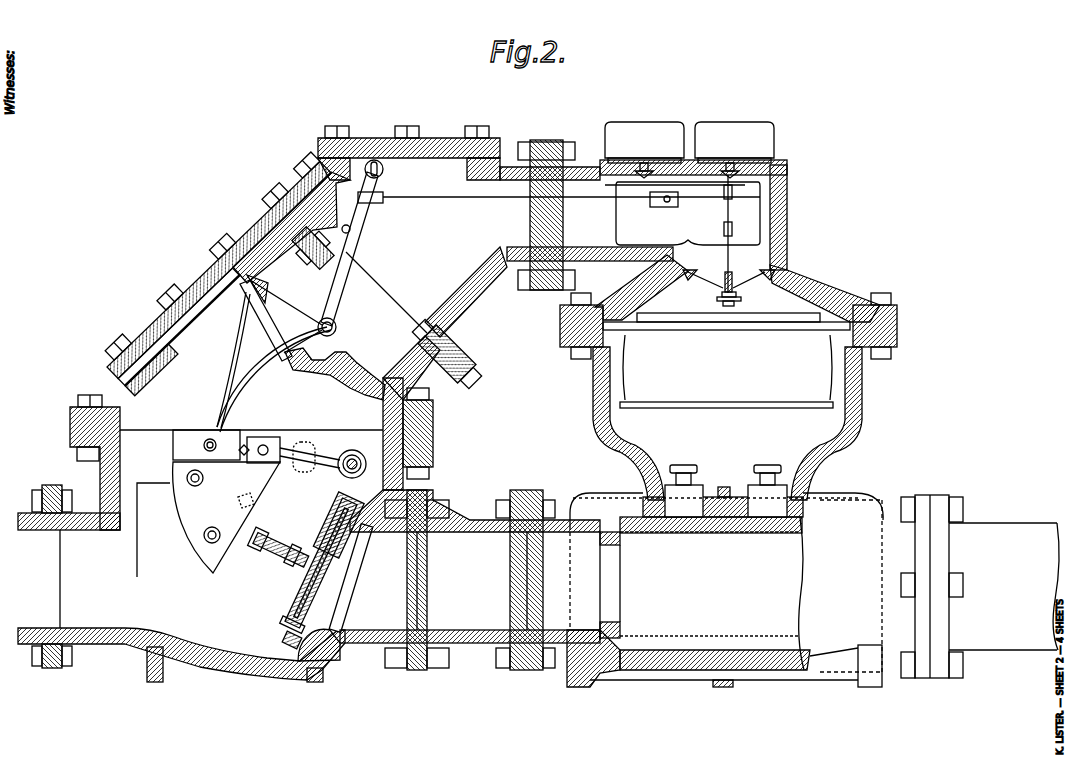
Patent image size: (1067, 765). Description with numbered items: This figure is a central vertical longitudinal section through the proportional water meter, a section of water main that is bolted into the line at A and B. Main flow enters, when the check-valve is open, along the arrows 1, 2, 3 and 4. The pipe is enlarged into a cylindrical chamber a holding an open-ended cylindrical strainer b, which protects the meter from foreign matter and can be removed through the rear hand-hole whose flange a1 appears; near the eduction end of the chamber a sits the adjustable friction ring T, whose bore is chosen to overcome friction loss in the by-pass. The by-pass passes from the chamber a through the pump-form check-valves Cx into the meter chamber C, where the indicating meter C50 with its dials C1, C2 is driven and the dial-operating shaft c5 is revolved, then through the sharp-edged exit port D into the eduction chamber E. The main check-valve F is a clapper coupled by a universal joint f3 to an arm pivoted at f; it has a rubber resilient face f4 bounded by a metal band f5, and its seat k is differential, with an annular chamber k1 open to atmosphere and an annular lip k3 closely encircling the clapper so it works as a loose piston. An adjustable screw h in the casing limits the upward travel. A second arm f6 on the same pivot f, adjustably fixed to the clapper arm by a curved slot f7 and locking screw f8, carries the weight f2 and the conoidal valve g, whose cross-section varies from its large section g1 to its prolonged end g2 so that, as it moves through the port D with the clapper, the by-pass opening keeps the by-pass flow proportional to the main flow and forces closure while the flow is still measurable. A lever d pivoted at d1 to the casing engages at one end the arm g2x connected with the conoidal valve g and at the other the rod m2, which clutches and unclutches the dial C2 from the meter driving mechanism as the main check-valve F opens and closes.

The meter chamber C is at (556, 263).
The dial C1 is at (745, 132).
The dial C2 is at (645, 132).
The dial-operating shaft c5 is at (735, 255).
The indicating meter C50 is at (728, 396).
The check-valves of the ordinary pump form Cx is at (683, 466).
The rod m2 is at (452, 200).
The exit port D is at (281, 316).
The lever d is at (342, 252).
The pivot d1 is at (352, 228).
The prolonged point of the conoidal valve g2 is at (247, 287).
The large cross-section of the conoidal valve g1 is at (250, 314).
The conoidal valve g is at (295, 378).
The arm g2x is at (335, 338).
The second arm f6 is at (228, 360).
The chamber E is at (226, 462).
The bolting point B is at (50, 485).
The flow arrow 4 is at (16, 585).
The pivot f is at (352, 452).
The locking screw f8 is at (305, 440).
The weight f2 is at (197, 540).
The adjustable screw h is at (246, 510).
The curved slot f7 is at (300, 490).
The universal joint f3 is at (262, 578).
The main check-valve F is at (283, 608).
The band of metal f5 is at (280, 622).
The annular lip k3 is at (288, 642).
The valve seat k is at (365, 532).
The resilient face f4 is at (350, 572).
The annular chamber k1 is at (415, 492).
The flow arrow 3 is at (400, 585).
The adjustable friction ring T is at (612, 586).
The flow arrow 2 is at (720, 584).
The cylindrical strainer b is at (785, 540).
The cylindrical chamber a is at (755, 650).
The hand-hole plate flange a1 is at (878, 497).
The bolting point A is at (928, 490).
The flow arrow 1 is at (1037, 588).